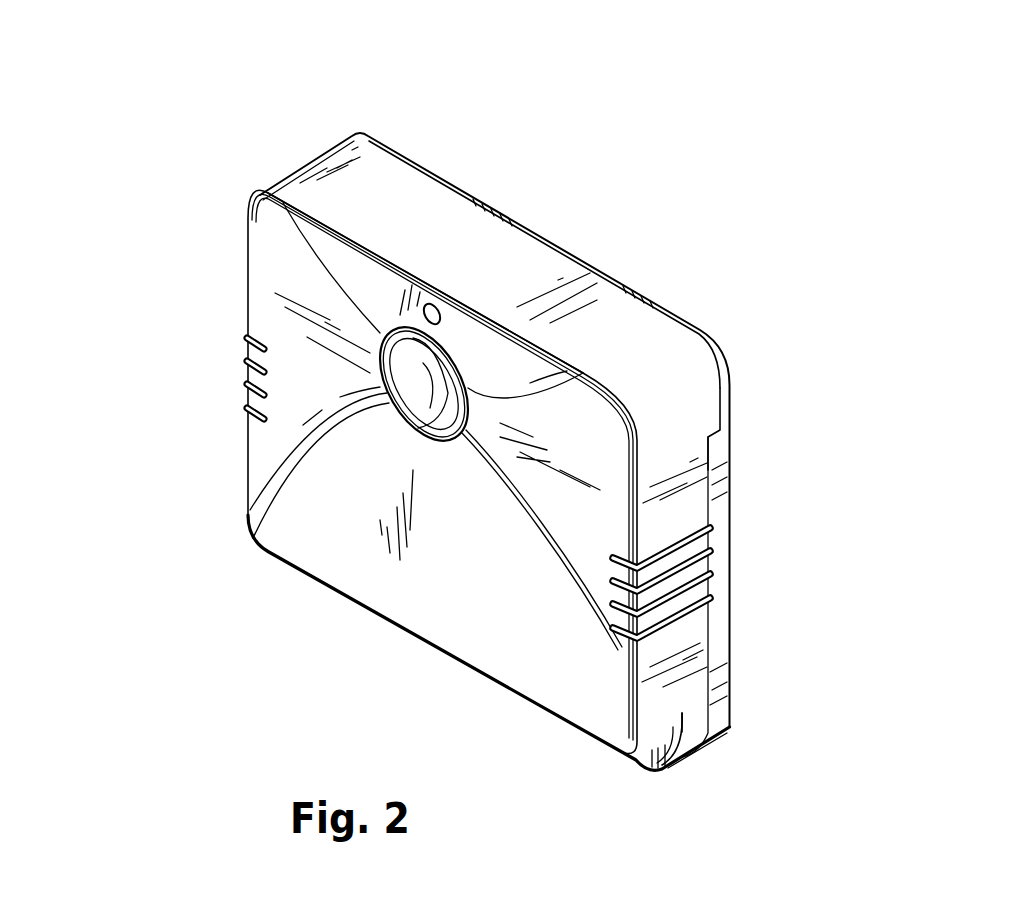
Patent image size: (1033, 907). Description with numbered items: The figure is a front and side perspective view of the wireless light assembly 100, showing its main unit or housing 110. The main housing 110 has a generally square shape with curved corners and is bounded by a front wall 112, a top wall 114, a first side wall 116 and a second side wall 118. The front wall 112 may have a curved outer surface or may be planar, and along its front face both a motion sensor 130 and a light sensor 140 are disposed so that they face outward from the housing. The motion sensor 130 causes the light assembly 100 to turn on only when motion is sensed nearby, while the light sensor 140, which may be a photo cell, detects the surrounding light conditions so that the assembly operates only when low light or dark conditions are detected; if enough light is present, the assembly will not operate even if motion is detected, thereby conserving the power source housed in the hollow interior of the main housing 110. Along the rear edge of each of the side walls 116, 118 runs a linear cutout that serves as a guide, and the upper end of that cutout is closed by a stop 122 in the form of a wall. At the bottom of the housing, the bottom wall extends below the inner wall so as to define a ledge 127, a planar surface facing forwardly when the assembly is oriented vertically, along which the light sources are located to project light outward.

The wireless light assembly 100 is at (592, 160).
The main housing 110 is at (377, 205).
The front wall 112 is at (290, 268).
The top wall 114 is at (650, 370).
The first side wall 116 is at (248, 465).
The second side wall 118 is at (663, 487).
The stop 122 is at (712, 433).
The ledge 127 is at (651, 775).
The motion sensor 130 is at (407, 373).
The light sensor 140 is at (432, 305).